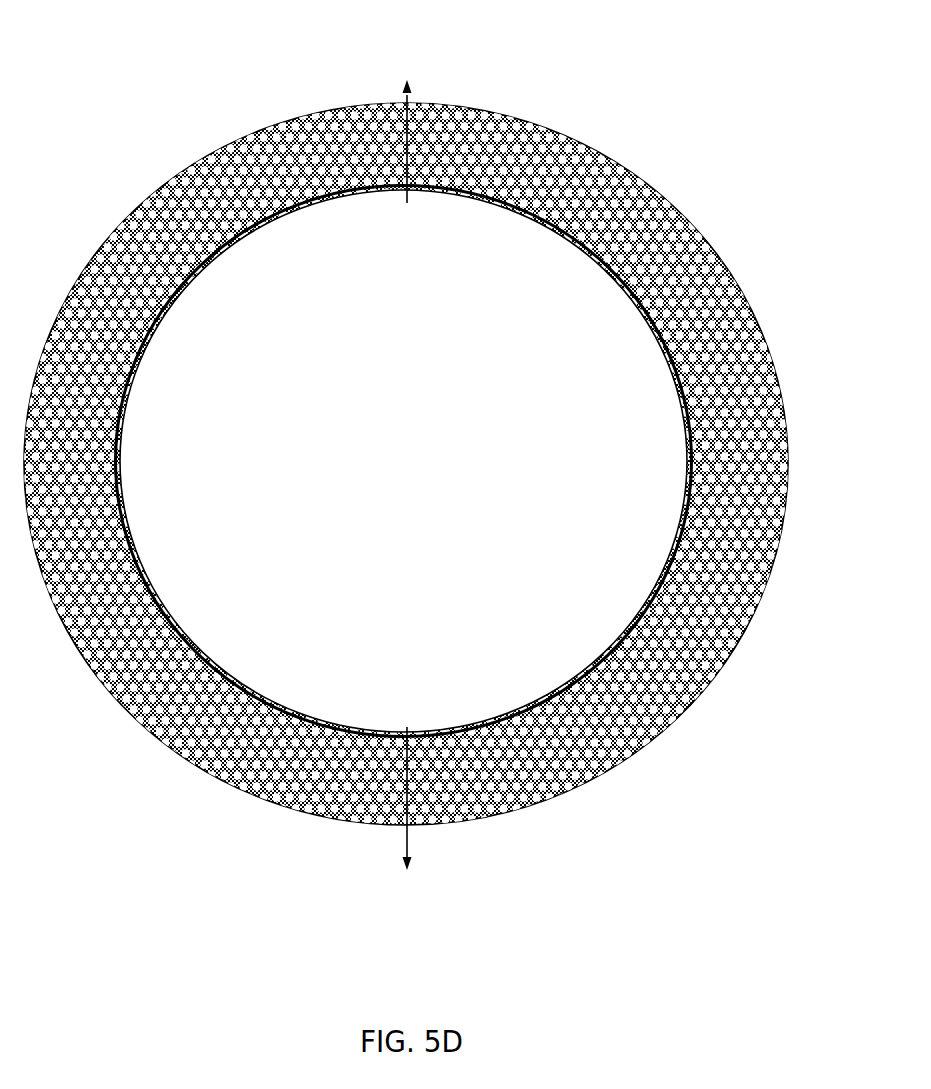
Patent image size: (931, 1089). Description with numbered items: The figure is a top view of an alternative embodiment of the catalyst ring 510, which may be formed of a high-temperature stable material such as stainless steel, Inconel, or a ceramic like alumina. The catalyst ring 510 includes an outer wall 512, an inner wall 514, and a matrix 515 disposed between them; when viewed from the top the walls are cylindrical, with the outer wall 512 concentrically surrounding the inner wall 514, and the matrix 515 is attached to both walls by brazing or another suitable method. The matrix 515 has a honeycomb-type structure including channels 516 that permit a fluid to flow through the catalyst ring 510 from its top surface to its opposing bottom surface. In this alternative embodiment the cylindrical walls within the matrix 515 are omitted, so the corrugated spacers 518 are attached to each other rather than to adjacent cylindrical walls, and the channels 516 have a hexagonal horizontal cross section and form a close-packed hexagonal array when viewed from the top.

The catalyst ring 510 is at (638, 90).
The outer wall 512 is at (725, 260).
The inner wall 514 is at (582, 242).
The matrix 515 is at (783, 727).
The channels 516 is at (668, 693).
The corrugated spacers 518 is at (607, 717).